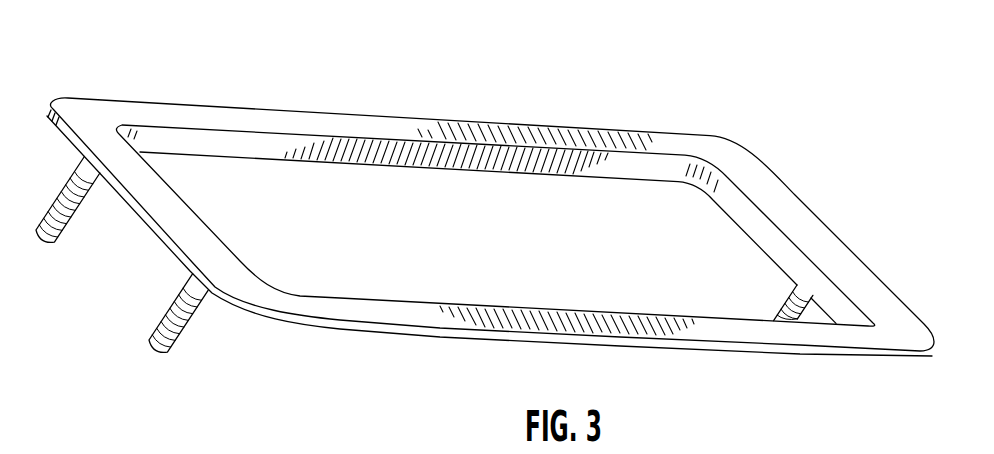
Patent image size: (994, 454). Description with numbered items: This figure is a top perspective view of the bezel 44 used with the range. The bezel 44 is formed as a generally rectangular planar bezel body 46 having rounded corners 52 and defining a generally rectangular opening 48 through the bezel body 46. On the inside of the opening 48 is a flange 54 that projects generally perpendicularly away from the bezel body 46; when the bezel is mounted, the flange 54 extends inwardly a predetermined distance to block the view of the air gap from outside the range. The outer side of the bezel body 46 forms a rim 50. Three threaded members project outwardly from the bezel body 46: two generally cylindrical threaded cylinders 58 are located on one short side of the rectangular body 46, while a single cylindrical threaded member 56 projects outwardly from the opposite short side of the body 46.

The bezel 44 is at (842, 123).
The bezel body 46 is at (876, 251).
The opening 48 is at (613, 220).
The rim 50 is at (143, 197).
The rounded corners 52 is at (107, 110).
The flange 54 is at (262, 145).
The cylindrical threaded member 56 is at (774, 312).
The threaded cylinders 58 is at (152, 331).